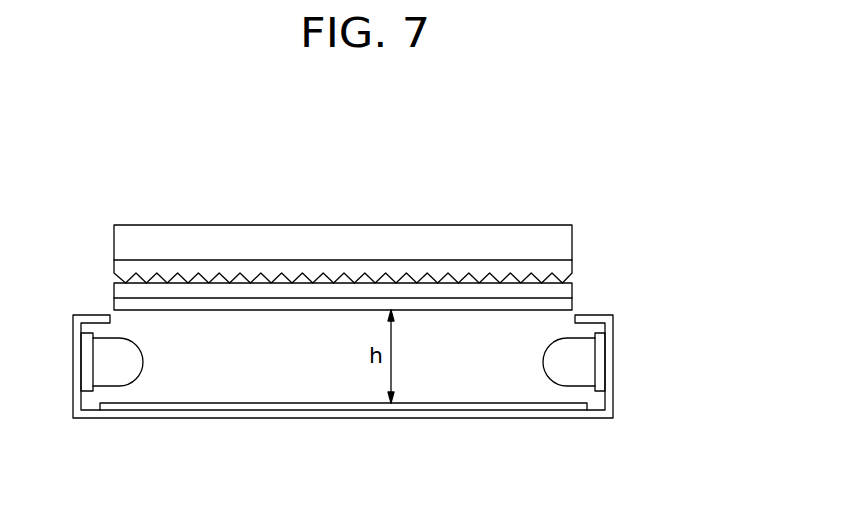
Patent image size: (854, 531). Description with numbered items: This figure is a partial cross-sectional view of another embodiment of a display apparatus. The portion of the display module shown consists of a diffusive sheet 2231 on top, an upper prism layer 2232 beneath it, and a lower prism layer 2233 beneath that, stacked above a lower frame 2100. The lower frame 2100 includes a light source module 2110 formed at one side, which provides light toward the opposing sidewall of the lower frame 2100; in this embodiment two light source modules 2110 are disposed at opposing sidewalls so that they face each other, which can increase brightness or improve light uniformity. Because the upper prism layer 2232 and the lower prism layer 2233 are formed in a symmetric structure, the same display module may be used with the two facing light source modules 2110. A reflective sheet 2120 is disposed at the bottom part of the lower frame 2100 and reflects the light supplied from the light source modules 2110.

The diffusive sheet 2231 is at (572, 238).
The upper prism layer 2232 is at (572, 269).
The lower prism layer 2233 is at (572, 293).
The lower frame 2100 is at (613, 363).
The light source module 2110 is at (117, 377).
The reflective sheet 2120 is at (487, 403).